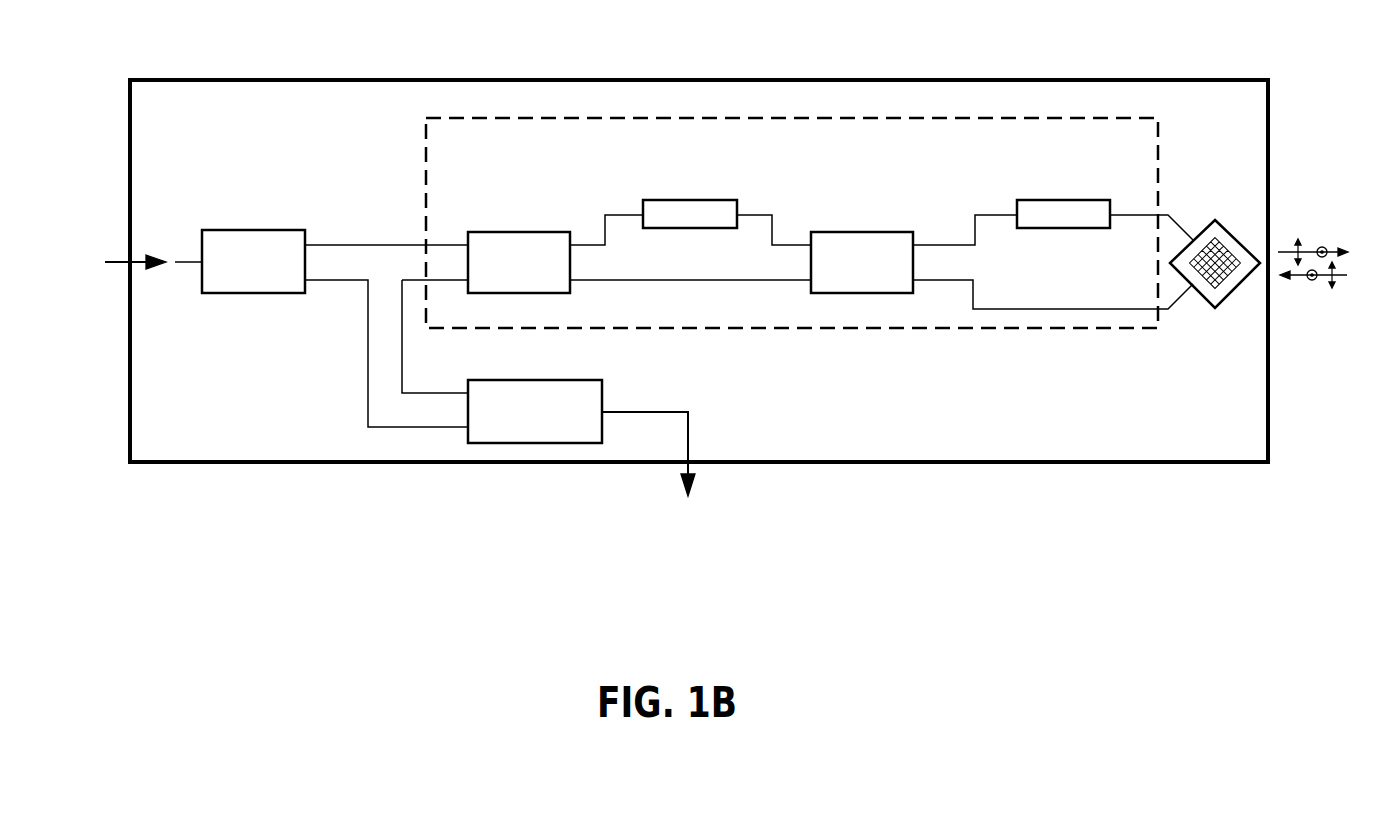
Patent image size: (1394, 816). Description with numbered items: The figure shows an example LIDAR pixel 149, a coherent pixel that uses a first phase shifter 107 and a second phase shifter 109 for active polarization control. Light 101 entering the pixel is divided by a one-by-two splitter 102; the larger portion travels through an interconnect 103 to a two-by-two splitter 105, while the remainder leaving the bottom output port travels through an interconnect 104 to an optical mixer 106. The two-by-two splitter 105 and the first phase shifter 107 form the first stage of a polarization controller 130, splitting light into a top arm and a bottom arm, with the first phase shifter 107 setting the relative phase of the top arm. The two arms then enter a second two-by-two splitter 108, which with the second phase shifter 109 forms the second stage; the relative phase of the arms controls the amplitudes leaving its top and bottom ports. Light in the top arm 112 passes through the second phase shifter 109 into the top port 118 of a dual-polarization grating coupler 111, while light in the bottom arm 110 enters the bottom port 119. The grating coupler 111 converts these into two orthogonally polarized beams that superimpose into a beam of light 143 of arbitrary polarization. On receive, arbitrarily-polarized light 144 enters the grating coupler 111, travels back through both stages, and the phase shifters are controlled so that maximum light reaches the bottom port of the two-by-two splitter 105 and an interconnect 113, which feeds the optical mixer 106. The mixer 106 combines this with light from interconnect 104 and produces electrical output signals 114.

The light 101 is at (125, 255).
The 1×2 splitter 102 is at (252, 228).
The interconnect 103 is at (380, 243).
The interconnect 104 is at (362, 350).
The 2×2 splitter 105 is at (520, 230).
The optical mixer 106 is at (535, 411).
The first phase shifter 107 is at (690, 200).
The second 2×2 splitter 108 is at (860, 230).
The second phase shifter 109 is at (1063, 200).
The bottom arm 110 is at (1063, 314).
The dual-polarization grating coupler 111 is at (1213, 218).
The top arm 112 is at (1142, 200).
The interconnect 113 is at (402, 377).
The output signals 114 is at (698, 423).
The top port 118 is at (1183, 205).
The bottom port 119 is at (1185, 322).
The polarization controller 130 is at (426, 120).
The beam of light 143 is at (1335, 237).
The arbitrarily-polarized light 144 is at (1312, 287).
The LIDAR pixel 149 is at (193, 126).